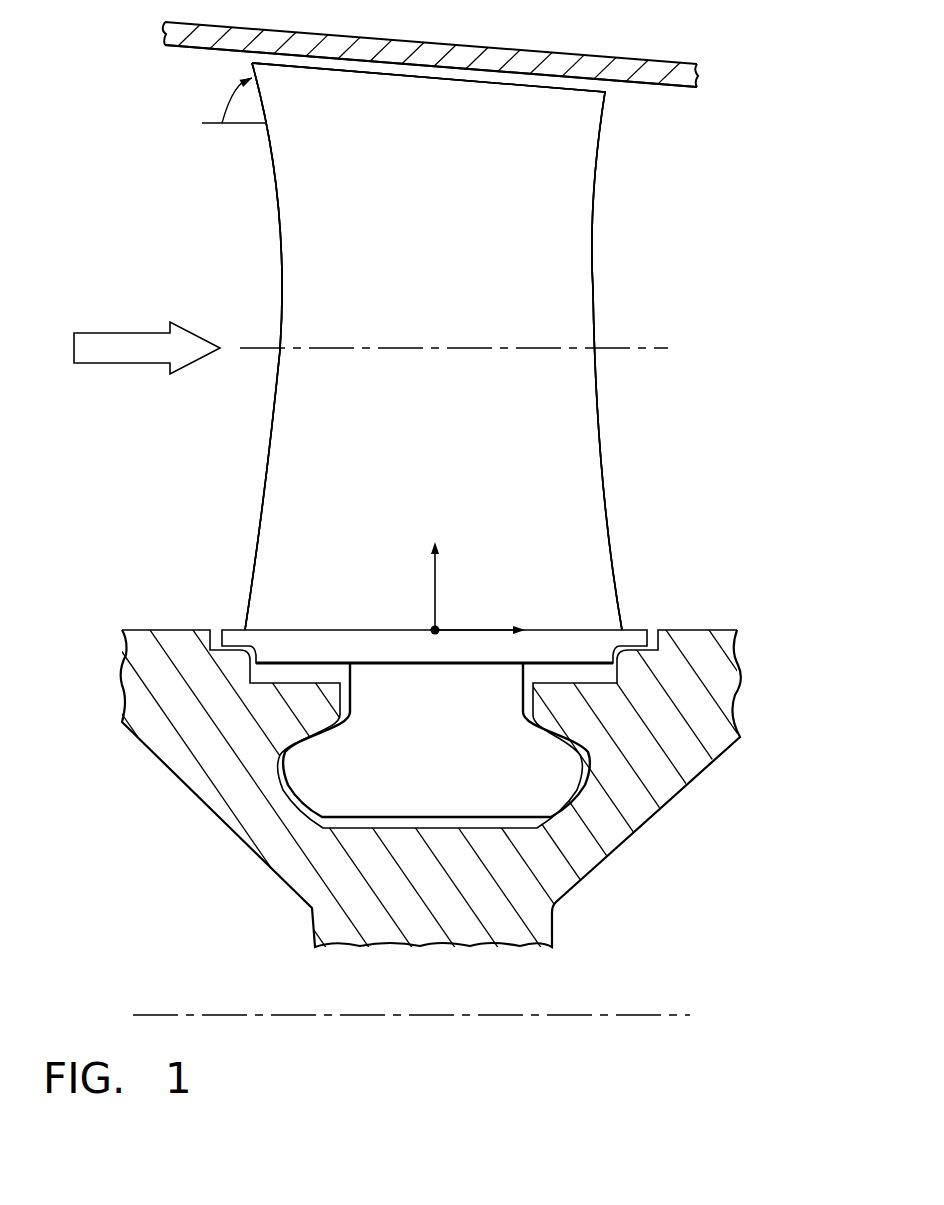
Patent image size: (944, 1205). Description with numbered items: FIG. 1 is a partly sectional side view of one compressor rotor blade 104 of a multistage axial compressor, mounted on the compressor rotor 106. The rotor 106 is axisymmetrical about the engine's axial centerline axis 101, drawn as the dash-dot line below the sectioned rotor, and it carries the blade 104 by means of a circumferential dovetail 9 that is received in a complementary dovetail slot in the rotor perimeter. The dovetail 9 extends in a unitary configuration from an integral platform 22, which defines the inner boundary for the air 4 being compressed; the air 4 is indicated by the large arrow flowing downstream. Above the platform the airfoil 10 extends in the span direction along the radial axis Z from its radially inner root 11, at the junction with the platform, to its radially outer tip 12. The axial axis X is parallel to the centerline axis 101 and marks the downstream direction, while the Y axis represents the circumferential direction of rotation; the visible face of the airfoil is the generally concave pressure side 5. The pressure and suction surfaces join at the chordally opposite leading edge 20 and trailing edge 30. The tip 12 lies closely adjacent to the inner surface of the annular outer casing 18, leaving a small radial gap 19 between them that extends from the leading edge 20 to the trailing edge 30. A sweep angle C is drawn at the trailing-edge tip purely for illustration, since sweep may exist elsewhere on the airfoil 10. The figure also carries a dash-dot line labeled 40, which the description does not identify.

The air 4 is at (122, 330).
The pressure side 5 is at (437, 430).
The circumferential dovetail 9 is at (423, 772).
The airfoil 10 is at (255, 502).
The root 11 is at (583, 628).
The tip 12 is at (498, 80).
The annular outer casing 18 is at (673, 58).
The gap 19 is at (583, 85).
The leading edge 20 is at (278, 186).
The platform 22 is at (372, 650).
The trailing edge 30 is at (595, 300).
The airfoil centerline 40 is at (455, 347).
The axial centerline axis 101 is at (237, 1012).
The compressor rotor blade 104 is at (655, 402).
The compressor rotor 106 is at (735, 692).
The sweep angle C is at (224, 100).
The axial axis X is at (498, 627).
The circumferential axis Y is at (431, 627).
The radial axis Z is at (432, 578).